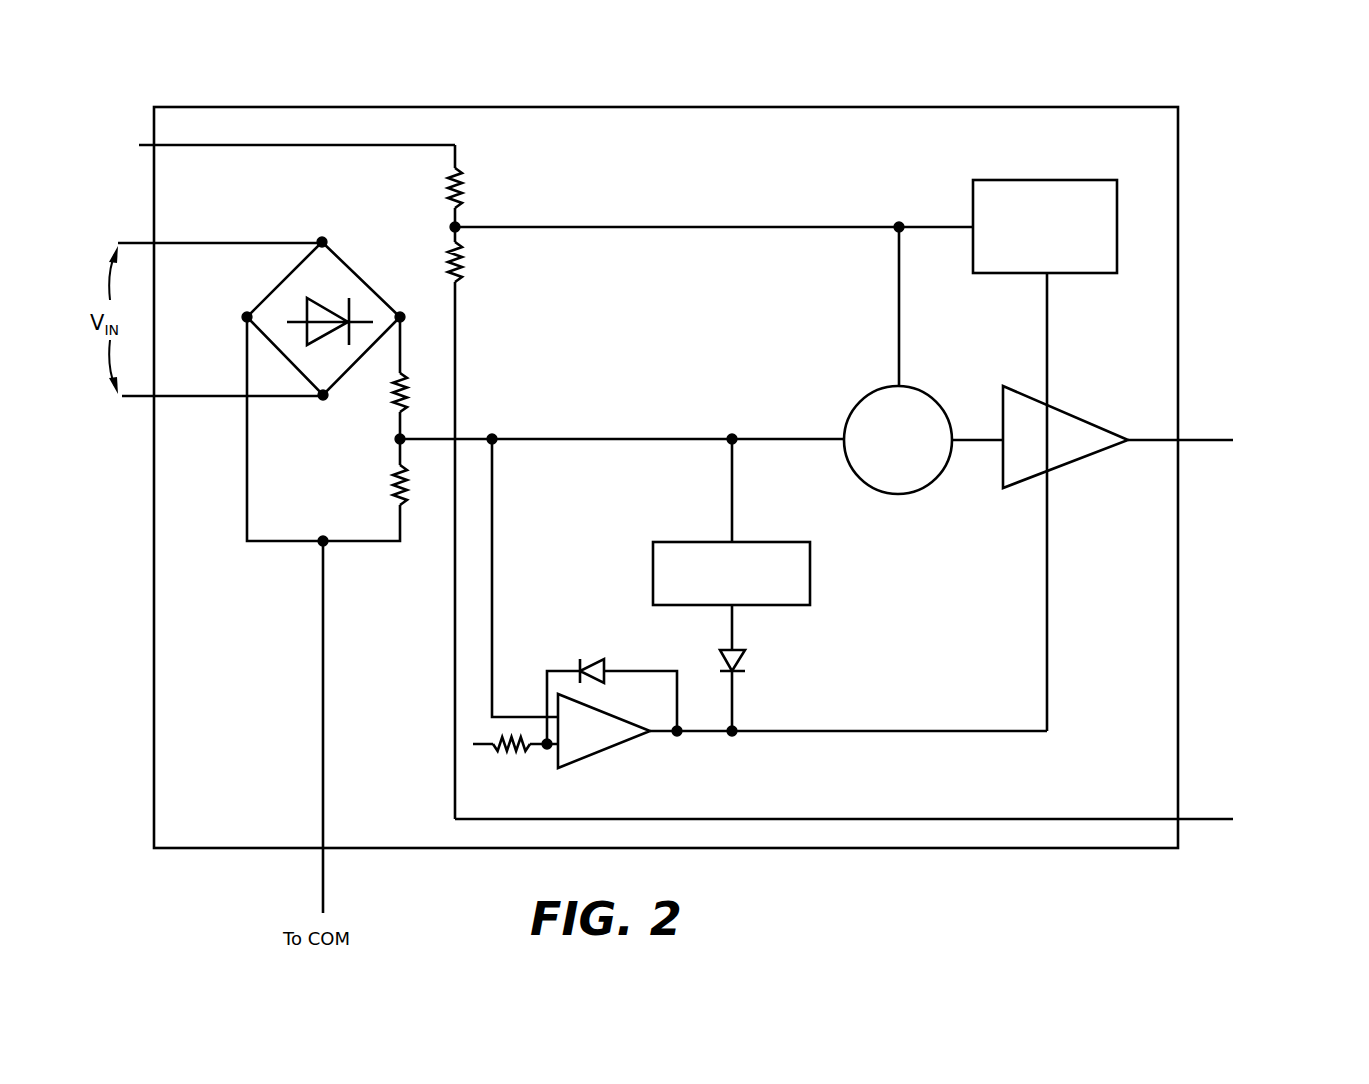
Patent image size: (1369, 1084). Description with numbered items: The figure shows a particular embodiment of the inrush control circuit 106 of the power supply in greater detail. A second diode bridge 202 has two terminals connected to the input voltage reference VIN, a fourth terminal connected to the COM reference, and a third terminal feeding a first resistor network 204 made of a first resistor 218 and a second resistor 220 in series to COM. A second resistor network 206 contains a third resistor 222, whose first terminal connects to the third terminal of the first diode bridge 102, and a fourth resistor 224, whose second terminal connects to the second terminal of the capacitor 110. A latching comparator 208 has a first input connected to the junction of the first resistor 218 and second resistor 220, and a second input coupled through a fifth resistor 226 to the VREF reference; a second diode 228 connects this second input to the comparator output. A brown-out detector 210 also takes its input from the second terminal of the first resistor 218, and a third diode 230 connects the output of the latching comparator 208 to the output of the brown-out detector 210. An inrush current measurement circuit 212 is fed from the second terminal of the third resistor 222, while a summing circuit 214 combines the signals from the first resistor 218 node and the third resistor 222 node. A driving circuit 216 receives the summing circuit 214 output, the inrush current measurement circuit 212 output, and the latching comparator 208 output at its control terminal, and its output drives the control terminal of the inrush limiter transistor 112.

The first diode bridge 102 is at (249, 118).
The inrush control circuit 106 is at (883, 107).
The capacitor 110 is at (1267, 800).
The inrush limiter transistor 112 is at (1265, 415).
The second diode bridge 202 is at (285, 277).
The first resistor network 204 is at (385, 442).
The second resistor network 206 is at (428, 214).
The latching comparator 208 is at (587, 758).
The brown-out detector 210 is at (813, 572).
The inrush current measurement circuit 212 is at (973, 200).
The summing circuit 214 is at (848, 410).
The driving circuit 216 is at (1000, 465).
The first resistor 218 is at (402, 410).
The second resistor 220 is at (402, 505).
The third resistor 222 is at (457, 167).
The fourth resistor 224 is at (457, 282).
The fifth resistor 226 is at (512, 748).
The second diode 228 is at (592, 665).
The third diode 230 is at (745, 658).